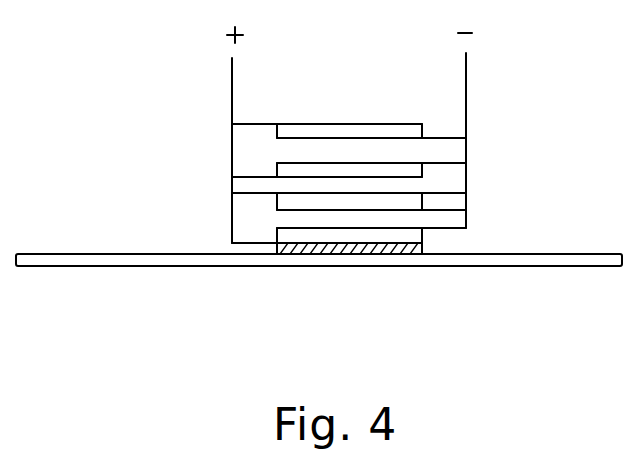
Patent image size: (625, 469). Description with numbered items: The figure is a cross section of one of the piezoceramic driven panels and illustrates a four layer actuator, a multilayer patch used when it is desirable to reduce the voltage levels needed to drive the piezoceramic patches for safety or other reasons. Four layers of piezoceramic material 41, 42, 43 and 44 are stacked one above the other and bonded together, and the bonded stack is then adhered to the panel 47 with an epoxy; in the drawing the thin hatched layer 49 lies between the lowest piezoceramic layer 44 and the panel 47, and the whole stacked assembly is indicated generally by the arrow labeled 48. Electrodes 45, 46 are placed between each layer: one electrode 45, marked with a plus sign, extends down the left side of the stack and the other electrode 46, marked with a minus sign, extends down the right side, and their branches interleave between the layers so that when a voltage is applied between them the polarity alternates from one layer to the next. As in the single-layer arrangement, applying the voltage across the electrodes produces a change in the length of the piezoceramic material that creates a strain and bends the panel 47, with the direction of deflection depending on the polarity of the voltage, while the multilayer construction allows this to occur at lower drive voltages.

The layer of piezoceramic material 41 is at (422, 124).
The layer of piezoceramic material 42 is at (422, 170).
The layer of piezoceramic material 43 is at (422, 198).
The layer of piezoceramic material 44 is at (425, 236).
The electrode 45 is at (232, 85).
The electrode 46 is at (466, 75).
The panel 47 is at (535, 270).
The laminated piezoelectric element 48 is at (200, 156).
The adhesive layer 49 is at (357, 250).